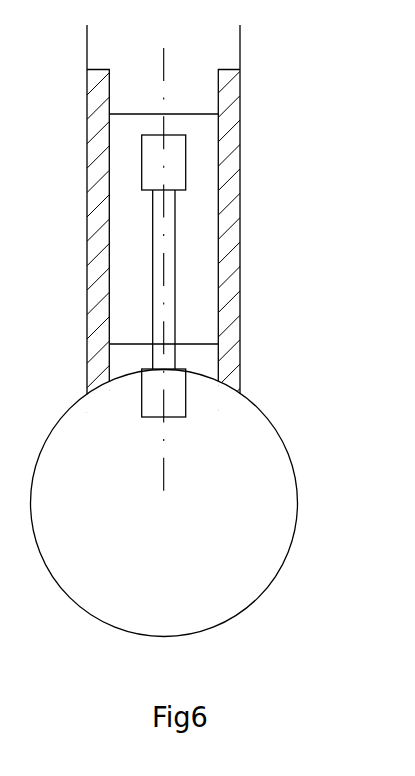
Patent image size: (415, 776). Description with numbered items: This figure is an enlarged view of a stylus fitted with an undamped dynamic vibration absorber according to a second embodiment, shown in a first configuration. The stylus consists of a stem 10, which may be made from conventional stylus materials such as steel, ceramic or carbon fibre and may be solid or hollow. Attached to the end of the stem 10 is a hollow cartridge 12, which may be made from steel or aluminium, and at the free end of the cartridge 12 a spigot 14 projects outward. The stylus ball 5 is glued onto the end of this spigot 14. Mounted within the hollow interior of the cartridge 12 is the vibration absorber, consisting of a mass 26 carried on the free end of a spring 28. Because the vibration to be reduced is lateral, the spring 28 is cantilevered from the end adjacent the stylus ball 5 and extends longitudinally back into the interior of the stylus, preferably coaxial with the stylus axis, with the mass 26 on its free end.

The stem 10 is at (200, 44).
The hollow cartridge 12 is at (232, 215).
The mass 26 is at (152, 173).
The spring 28 is at (163, 266).
The spigot 14 is at (186, 403).
The stylus ball 5 is at (103, 408).